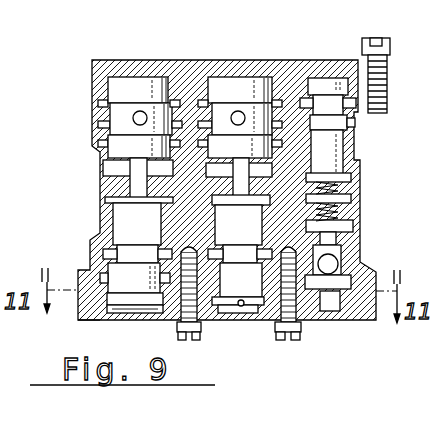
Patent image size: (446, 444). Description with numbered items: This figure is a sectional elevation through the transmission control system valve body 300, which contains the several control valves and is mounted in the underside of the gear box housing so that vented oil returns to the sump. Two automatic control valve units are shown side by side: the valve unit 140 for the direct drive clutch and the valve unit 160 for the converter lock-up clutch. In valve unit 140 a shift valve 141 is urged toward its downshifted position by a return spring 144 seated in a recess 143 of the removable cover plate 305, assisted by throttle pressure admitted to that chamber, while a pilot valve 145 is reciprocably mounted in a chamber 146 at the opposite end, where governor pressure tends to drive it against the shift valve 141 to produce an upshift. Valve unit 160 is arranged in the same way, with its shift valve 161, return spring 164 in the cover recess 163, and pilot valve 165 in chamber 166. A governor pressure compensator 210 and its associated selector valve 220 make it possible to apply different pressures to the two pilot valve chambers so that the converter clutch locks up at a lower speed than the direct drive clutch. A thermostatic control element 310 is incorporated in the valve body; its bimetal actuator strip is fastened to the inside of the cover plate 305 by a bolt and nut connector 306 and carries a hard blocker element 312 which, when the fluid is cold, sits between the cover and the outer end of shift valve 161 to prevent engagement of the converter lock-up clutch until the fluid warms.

The automatic control valve unit 140 is at (118, 83).
The pilot valve chamber 146 is at (157, 80).
The pilot valve 145 is at (142, 157).
The shift valve 141 is at (138, 201).
The valve chamber 143 is at (110, 320).
The shift valve return spring 144 is at (132, 317).
The pilot valve chamber 166 is at (226, 77).
The automatic control valve unit 160 is at (233, 76).
The pilot valve 165 is at (240, 157).
The shift valve 161 is at (239, 201).
The shift valve blocker element 312 is at (240, 254).
The shift valve return spring 164 is at (241, 280).
The thermostatic control element 310 is at (258, 320).
The valve chamber 163 is at (272, 327).
The governor pressure compensator 210 is at (330, 76).
The selector valve 220 is at (337, 266).
The valve body 300 is at (93, 187).
The cover plate 305 is at (360, 319).
The bolt and nut connector 306 is at (76, 313).